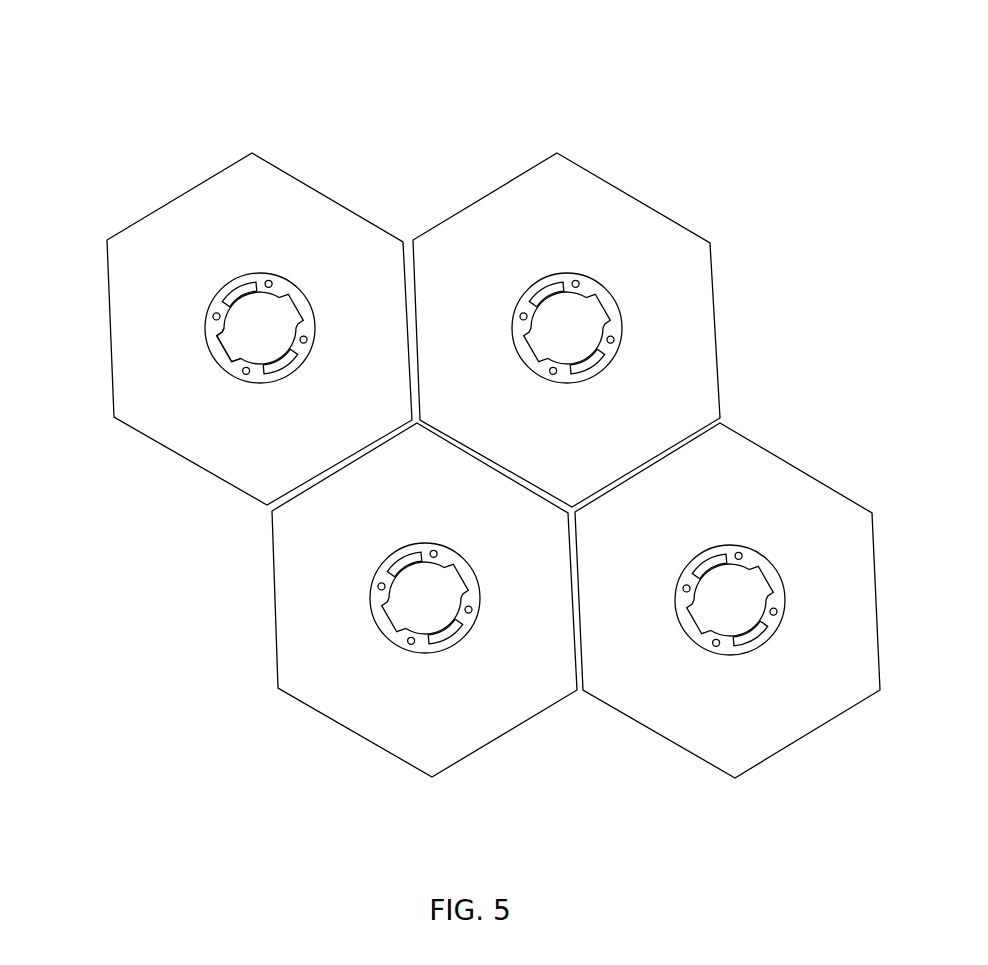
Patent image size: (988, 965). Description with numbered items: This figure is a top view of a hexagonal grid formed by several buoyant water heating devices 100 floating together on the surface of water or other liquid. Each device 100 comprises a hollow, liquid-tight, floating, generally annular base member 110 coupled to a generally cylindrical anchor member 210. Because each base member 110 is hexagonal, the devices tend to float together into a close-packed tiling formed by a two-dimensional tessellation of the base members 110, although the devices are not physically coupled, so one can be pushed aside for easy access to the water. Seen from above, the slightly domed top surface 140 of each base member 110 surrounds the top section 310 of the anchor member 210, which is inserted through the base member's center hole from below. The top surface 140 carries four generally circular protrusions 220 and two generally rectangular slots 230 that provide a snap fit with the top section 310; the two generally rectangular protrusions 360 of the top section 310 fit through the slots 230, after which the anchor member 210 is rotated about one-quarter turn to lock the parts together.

The buoyant water heating device 100 is at (460, 439).
The base member 110 is at (226, 294).
The top surface 140 is at (150, 262).
The anchor member 210 is at (267, 310).
The generally circular protrusions 220 is at (248, 374).
The generally rectangular slots 230 is at (290, 362).
The top section 310 is at (215, 307).
The generally rectangular protrusions 360 is at (227, 348).